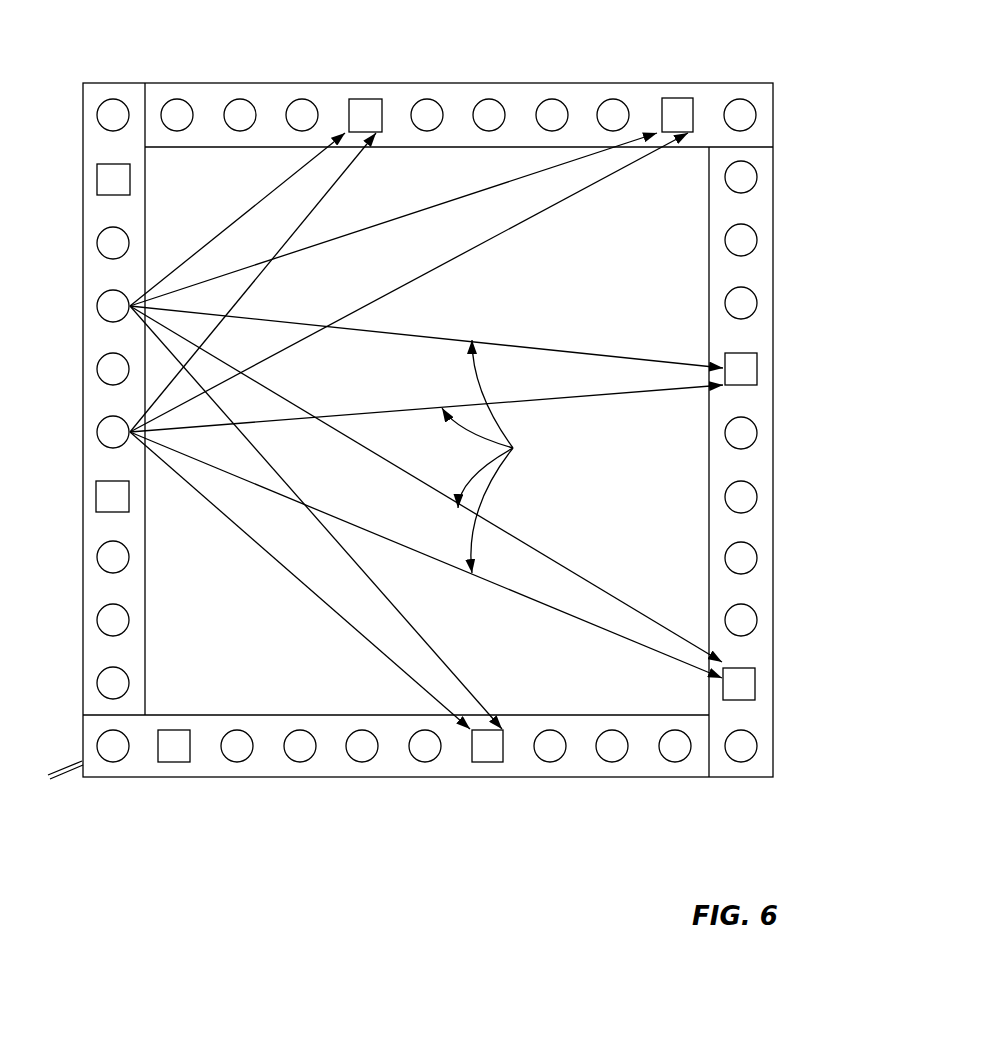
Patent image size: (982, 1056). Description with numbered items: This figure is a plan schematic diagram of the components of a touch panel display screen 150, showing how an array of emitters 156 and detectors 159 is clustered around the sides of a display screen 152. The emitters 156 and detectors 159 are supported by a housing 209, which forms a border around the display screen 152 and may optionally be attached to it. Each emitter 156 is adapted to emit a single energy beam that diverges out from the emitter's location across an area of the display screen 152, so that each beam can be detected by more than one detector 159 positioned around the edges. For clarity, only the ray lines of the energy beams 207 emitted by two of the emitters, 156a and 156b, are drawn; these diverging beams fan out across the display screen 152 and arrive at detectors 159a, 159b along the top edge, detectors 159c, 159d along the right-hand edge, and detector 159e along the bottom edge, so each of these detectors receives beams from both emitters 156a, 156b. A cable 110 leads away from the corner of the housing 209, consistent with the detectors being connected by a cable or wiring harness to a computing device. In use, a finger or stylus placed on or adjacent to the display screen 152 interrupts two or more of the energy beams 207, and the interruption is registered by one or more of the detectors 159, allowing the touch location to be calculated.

The cable 110 is at (63, 777).
The touch panel display screen 150 is at (156, 780).
The display screen 152 is at (300, 683).
The emitter 156 is at (113, 98).
The emitter 156a is at (97, 306).
The emitter 156b is at (97, 432).
The detector 159 is at (97, 175).
The detector 159a is at (368, 98).
The detector 159b is at (675, 98).
The detector 159c is at (757, 373).
The detector 159d is at (755, 685).
The detector 159e is at (492, 763).
The energy beam 207 is at (513, 448).
The housing 209 is at (776, 147).